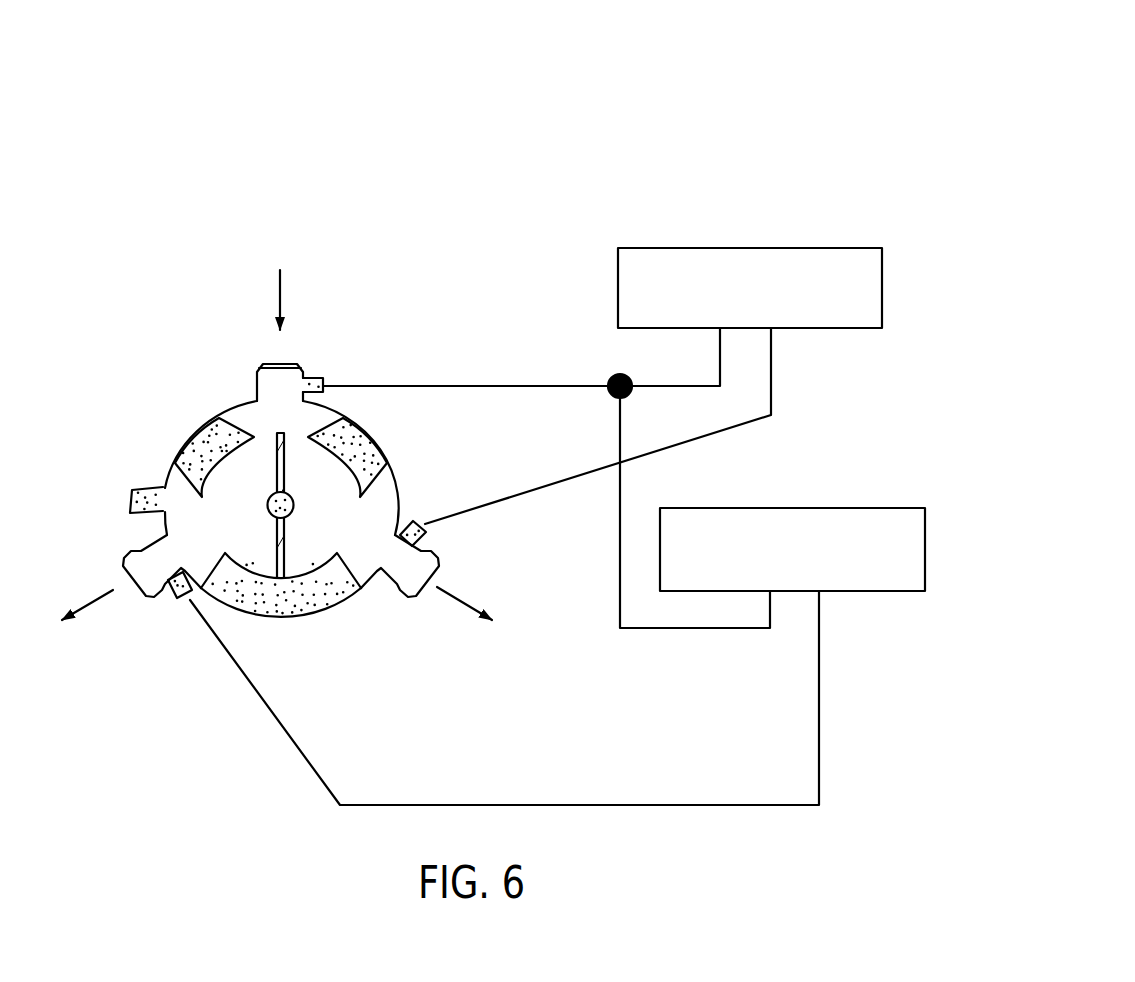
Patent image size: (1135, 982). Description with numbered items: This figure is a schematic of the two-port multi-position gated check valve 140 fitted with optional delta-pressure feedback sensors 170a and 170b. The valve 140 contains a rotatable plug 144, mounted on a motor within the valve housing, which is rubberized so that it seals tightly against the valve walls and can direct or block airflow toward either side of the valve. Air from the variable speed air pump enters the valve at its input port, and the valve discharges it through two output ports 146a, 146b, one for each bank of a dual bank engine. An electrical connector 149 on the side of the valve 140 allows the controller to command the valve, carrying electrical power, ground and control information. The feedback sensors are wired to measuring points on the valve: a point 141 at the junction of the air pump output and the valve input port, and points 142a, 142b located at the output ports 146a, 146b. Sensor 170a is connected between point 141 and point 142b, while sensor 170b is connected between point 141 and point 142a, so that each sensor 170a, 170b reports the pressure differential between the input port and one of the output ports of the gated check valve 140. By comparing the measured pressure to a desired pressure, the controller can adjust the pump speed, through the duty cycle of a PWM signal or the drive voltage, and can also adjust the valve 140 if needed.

The two-port multi-position gated check valve 140 is at (736, 84).
The point at the junction of the air pump output port and valve input port 141 is at (315, 366).
The point at output port 142a is at (175, 606).
The point at output port 142b is at (421, 515).
The plug 144 is at (270, 466).
The output port 146a is at (80, 610).
The output port 146b is at (468, 597).
The electrical connector 149 is at (142, 479).
The delta-pressure feedback sensor 170a is at (760, 226).
The delta-pressure feedback sensor 170b is at (825, 494).